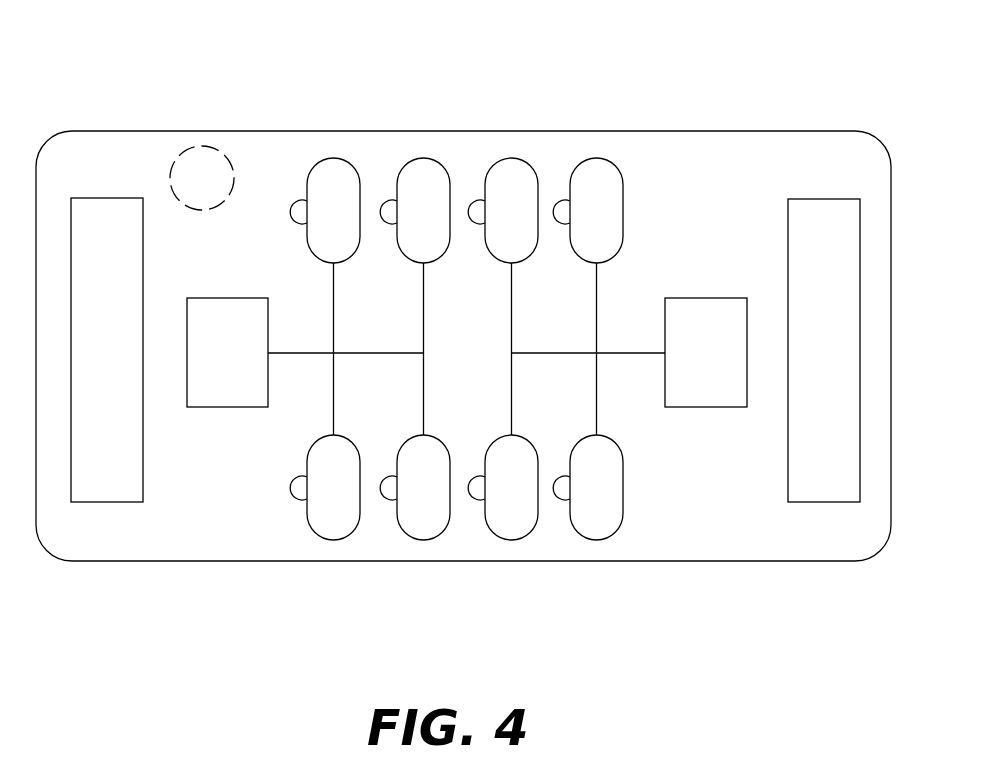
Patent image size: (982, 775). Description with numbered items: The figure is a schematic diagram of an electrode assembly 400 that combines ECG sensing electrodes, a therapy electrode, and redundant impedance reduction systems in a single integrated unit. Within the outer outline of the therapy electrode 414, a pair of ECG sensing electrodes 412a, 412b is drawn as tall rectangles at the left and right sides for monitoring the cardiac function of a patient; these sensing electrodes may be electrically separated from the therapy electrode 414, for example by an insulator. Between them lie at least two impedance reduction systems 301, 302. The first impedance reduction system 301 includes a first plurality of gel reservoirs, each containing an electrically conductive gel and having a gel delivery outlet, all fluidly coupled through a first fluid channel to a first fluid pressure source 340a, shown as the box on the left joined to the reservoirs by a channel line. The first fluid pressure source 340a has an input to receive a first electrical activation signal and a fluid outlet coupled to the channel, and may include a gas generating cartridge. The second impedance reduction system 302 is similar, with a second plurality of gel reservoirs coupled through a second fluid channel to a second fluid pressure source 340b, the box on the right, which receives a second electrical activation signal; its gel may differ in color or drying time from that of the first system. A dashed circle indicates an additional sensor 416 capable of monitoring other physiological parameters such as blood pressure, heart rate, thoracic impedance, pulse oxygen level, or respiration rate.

The electrode assembly 400 is at (463, 353).
The therapy electrode 414 is at (734, 518).
The additional sensors 416 is at (204, 147).
The ECG sensing electrode 412a is at (144, 265).
The ECG sensing electrode 412b is at (788, 238).
The first fluid pressure source 340a is at (256, 407).
The second fluid pressure source 340b is at (672, 410).
The first impedance reduction system 301 is at (455, 593).
The second impedance reduction system 302 is at (779, 108).